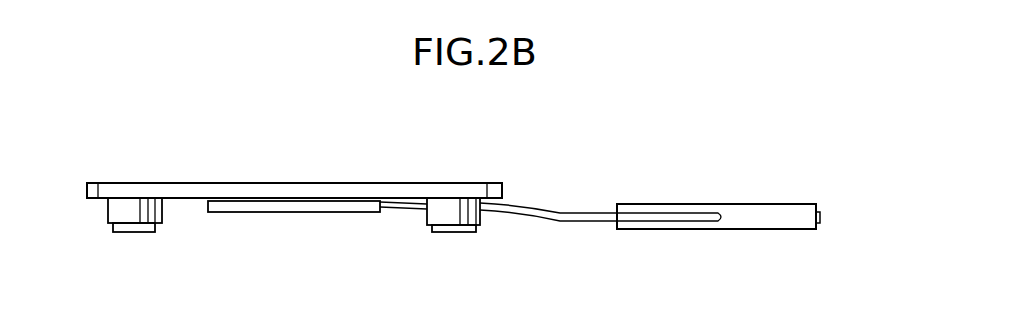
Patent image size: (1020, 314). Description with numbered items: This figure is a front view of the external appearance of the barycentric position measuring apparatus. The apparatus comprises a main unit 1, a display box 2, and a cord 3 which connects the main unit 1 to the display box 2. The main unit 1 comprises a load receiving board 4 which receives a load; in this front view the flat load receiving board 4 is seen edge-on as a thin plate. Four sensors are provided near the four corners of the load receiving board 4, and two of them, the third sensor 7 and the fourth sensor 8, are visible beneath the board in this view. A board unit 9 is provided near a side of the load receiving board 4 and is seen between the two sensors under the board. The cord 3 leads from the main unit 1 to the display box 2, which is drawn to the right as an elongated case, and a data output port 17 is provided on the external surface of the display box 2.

The main unit 1 is at (168, 146).
The display box 2 is at (741, 171).
The cord 3 is at (546, 213).
The load receiving board 4 is at (253, 183).
The third sensor 7 is at (426, 229).
The fourth sensor 8 is at (160, 226).
The board unit 9 is at (293, 212).
The data output port 17 is at (822, 216).